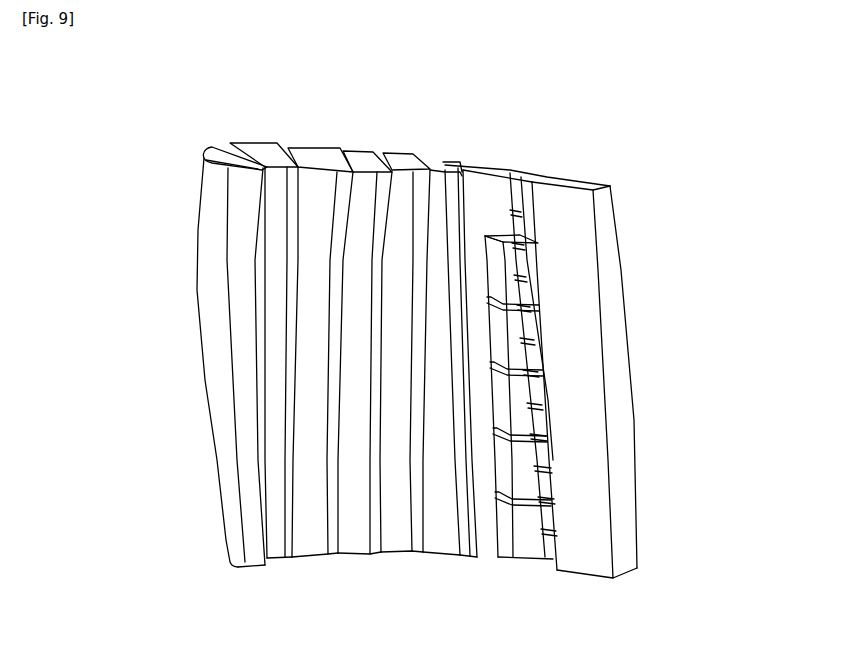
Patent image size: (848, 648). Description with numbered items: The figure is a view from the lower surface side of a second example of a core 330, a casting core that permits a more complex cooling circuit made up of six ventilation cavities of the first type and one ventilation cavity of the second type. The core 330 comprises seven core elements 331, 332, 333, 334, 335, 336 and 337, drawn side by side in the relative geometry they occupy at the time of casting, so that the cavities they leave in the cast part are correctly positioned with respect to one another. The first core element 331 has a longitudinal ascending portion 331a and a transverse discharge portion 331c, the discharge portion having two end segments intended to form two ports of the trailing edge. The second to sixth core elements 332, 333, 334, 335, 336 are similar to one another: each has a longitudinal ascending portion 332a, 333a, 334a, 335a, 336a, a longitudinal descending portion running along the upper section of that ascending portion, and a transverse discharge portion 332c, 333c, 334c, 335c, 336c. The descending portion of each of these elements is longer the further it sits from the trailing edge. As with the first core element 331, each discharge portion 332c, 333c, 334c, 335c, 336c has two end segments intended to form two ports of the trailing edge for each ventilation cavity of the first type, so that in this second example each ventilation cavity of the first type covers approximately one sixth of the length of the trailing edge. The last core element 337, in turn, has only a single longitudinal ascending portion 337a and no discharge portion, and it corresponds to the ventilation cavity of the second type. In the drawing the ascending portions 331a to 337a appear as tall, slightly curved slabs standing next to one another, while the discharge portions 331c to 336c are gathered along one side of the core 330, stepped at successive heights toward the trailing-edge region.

The core 330 is at (655, 190).
The first core element 331 is at (480, 162).
The longitudinal ascending portion 331a is at (492, 558).
The transverse discharge portion 331c is at (493, 192).
The second core element 332 is at (430, 158).
The longitudinal ascending portion 332a is at (448, 541).
The transverse discharge portion 332c is at (515, 282).
The third core element 333 is at (385, 142).
The longitudinal ascending portion 333a is at (408, 553).
The transverse discharge portion 333c is at (518, 348).
The fourth core element 334 is at (342, 144).
The longitudinal ascending portion 334a is at (365, 558).
The transverse discharge portion 334c is at (520, 407).
The fifth core element 335 is at (284, 140).
The longitudinal ascending portion 335a is at (326, 558).
The transverse discharge portion 335c is at (527, 470).
The sixth core element 336 is at (242, 139).
The longitudinal ascending portion 336a is at (278, 571).
The transverse discharge portion 336c is at (527, 532).
The core element 337 is at (213, 149).
The longitudinal ascending portion 337a is at (247, 568).